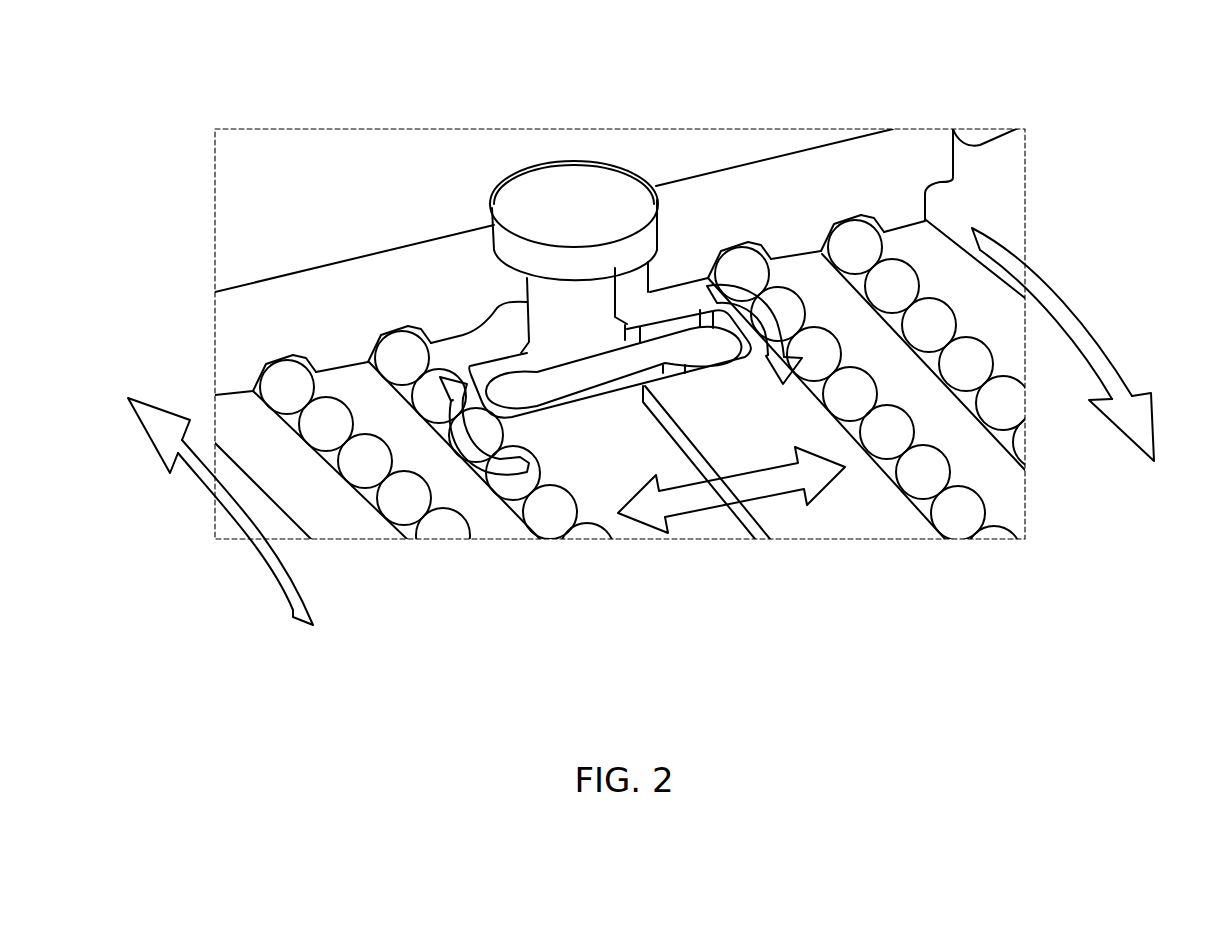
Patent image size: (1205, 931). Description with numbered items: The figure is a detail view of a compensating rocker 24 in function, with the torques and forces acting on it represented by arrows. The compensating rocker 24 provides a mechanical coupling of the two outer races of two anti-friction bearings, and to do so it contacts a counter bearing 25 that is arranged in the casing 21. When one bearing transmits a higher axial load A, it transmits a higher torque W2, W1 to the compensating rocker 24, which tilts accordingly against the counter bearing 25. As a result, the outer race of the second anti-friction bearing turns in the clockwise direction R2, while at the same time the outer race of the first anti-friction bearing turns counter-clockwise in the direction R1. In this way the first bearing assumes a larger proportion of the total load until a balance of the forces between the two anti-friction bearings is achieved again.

The casing 21 is at (235, 170).
The compensating rocker 24 is at (510, 390).
The counter bearing 25 is at (553, 203).
The torque W1 is at (781, 315).
The torque W2 is at (490, 459).
The counter-clockwise rotation direction R1 is at (1070, 321).
The clockwise rotation direction R2 is at (273, 557).
The axial load A is at (773, 483).